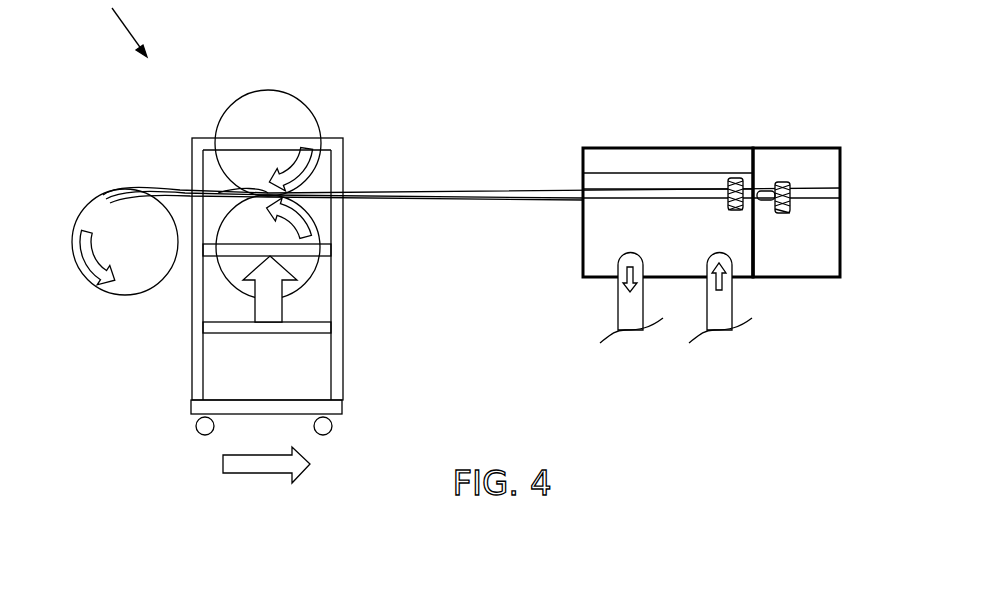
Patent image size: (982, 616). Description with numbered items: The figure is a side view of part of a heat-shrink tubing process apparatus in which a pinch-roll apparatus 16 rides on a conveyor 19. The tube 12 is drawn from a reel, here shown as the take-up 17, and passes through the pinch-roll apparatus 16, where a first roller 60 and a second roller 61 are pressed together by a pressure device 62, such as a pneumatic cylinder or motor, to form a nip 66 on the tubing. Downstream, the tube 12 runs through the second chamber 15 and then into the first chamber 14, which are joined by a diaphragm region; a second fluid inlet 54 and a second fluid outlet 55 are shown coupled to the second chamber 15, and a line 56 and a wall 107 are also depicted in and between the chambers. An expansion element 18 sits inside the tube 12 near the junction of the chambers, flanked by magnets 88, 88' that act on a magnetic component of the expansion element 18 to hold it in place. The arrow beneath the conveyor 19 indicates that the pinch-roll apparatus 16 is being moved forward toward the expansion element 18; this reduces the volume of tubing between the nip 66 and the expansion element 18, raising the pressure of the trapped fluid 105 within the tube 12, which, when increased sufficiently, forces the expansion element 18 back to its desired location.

The tube 12 is at (438, 198).
The first chamber 14 is at (826, 157).
The second chamber 15 is at (628, 155).
The pinch-roll apparatus 16 is at (245, 115).
The take-up 17 is at (105, 220).
The expansion element 18 is at (760, 190).
The conveyor 19 is at (330, 407).
The second fluid inlet 54 is at (722, 312).
The second fluid outlet 55 is at (635, 312).
The guide line 56 is at (688, 173).
The first roller 60 is at (250, 100).
The second roller 61 is at (230, 268).
The pressure device 62 is at (272, 312).
The nip 66 is at (268, 193).
The magnet 88 is at (724, 133).
The magnet 88' is at (817, 258).
The trapped fluid 105 is at (545, 193).
The partition wall 107 is at (757, 235).